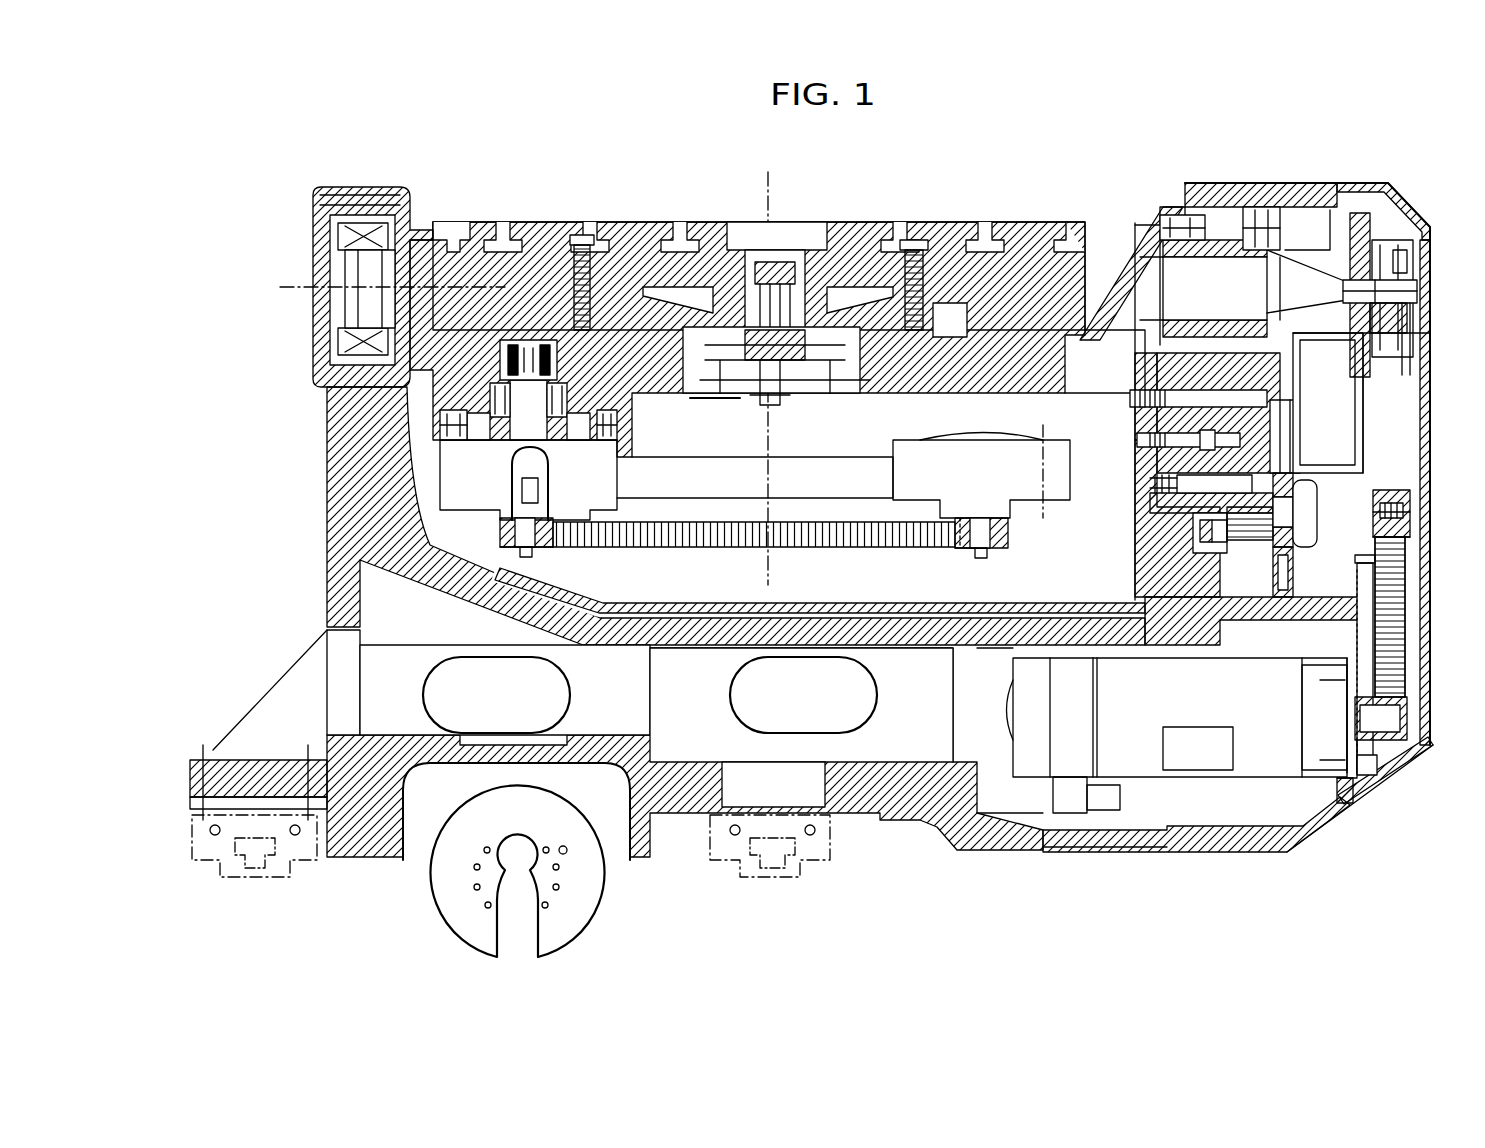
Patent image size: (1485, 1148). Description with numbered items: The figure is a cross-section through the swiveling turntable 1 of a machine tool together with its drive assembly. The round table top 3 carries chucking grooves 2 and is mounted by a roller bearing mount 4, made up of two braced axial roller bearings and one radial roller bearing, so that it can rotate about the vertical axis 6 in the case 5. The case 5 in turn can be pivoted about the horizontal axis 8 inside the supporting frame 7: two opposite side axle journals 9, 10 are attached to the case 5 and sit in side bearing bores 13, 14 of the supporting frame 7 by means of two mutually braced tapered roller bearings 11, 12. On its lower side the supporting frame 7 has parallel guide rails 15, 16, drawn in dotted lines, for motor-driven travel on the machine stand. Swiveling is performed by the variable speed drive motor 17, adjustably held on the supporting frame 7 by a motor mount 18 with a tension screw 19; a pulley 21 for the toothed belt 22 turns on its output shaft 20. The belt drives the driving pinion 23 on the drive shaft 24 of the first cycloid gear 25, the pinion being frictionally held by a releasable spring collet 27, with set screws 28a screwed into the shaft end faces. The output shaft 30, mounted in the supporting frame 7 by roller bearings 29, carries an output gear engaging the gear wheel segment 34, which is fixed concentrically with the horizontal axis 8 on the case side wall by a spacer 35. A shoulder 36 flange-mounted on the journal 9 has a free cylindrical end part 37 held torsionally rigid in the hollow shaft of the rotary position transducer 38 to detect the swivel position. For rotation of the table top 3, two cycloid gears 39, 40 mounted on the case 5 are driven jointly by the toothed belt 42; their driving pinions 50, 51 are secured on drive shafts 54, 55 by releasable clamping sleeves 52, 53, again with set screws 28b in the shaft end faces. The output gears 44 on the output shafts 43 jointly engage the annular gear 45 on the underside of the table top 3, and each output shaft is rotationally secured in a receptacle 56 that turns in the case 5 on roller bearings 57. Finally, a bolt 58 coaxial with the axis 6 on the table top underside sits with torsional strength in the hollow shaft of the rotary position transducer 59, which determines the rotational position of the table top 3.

The swiveling turntable 1 is at (372, 884).
The chucking grooves 2 is at (1028, 250).
The table top 3 is at (988, 268).
The roller bearing mount 4 is at (928, 300).
The case 5 is at (1145, 250).
The vertical axis 6 is at (766, 182).
The supporting frame 7 is at (1300, 195).
The horizontal axis 8 is at (292, 280).
The axle journal 9 is at (1220, 265).
The axle journal 10 is at (378, 250).
The tapered roller bearing 11 is at (1180, 215).
The tapered roller bearing 12 is at (365, 225).
The side bearing bore 13 is at (1258, 210).
The side bearing bore 14 is at (335, 215).
The guide rail 15 is at (243, 868).
The guide rail 16 is at (760, 868).
The drive motor 17 is at (1253, 760).
The motor mount 18 is at (1355, 780).
The tension screw 19 is at (1405, 625).
The output shaft 20 is at (1407, 715).
The pulley 21 is at (1373, 760).
The toothed belt 22 is at (1405, 600).
The driving pinion 23 is at (1343, 467).
The drive shaft 24 is at (1410, 525).
The first cycloid gear 25 is at (1357, 460).
The spring collet 27 is at (1408, 550).
The set screws 28a is at (1410, 510).
The set screws 28b is at (983, 518).
The roller bearings 29 is at (1175, 548).
The output shaft 30 is at (1195, 525).
The gear wheel segment 34 is at (1290, 440).
The spacer 35 is at (1265, 415).
The shoulder 36 is at (1345, 280).
The free cylindrical end part 37 is at (1400, 265).
The rotary position transducer 38 is at (1390, 318).
The cycloid gear 39 is at (455, 485).
The cycloid gear 40 is at (905, 475).
The toothed belt 42 is at (700, 545).
The output shafts 43 is at (560, 458).
The output gears 44 is at (515, 340).
The annular gear 45 is at (578, 265).
The driving pinion 50 is at (520, 518).
The driving pinion 51 is at (1008, 530).
The clamping sleeve 52 is at (528, 557).
The clamping sleeve 53 is at (965, 548).
The drive shaft 54 is at (547, 550).
The drive shaft 55 is at (990, 550).
The receptacle 56 is at (450, 420).
The roller bearings 57 is at (460, 392).
The bolt 58 is at (780, 395).
The rotary position transducer 59 is at (752, 398).